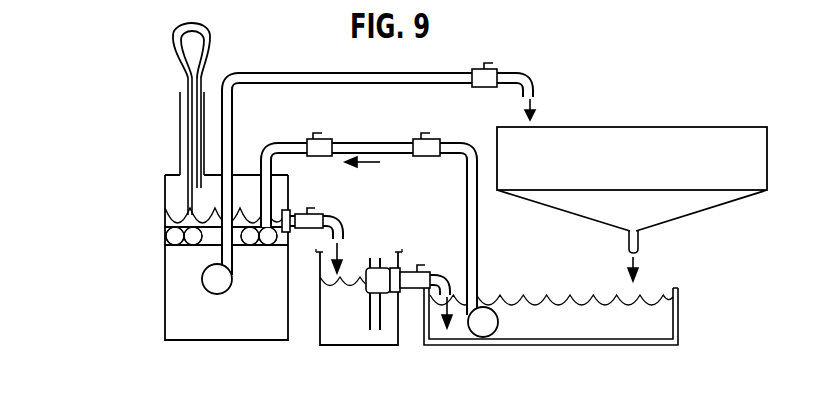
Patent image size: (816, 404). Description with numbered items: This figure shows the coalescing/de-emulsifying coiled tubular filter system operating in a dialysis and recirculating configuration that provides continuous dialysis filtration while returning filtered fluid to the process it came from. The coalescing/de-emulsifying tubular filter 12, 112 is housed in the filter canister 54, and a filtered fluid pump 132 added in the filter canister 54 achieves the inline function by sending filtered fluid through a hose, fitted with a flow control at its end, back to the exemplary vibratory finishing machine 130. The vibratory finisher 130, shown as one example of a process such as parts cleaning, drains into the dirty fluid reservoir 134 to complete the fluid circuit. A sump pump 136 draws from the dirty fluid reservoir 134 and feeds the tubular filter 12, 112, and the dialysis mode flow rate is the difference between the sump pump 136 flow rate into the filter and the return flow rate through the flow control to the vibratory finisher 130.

The coalescing/de-emulsifying tubular filter 12 is at (167, 247).
The coalescing/de-emulsifying tubular filter 112 is at (167, 247).
The filter canister 54 is at (260, 330).
The vibratory finishing machine 130 is at (688, 137).
The filtered fluid pump 132 is at (221, 287).
The dirty fluid reservoir 134 is at (602, 328).
The sump pump 136 is at (488, 326).